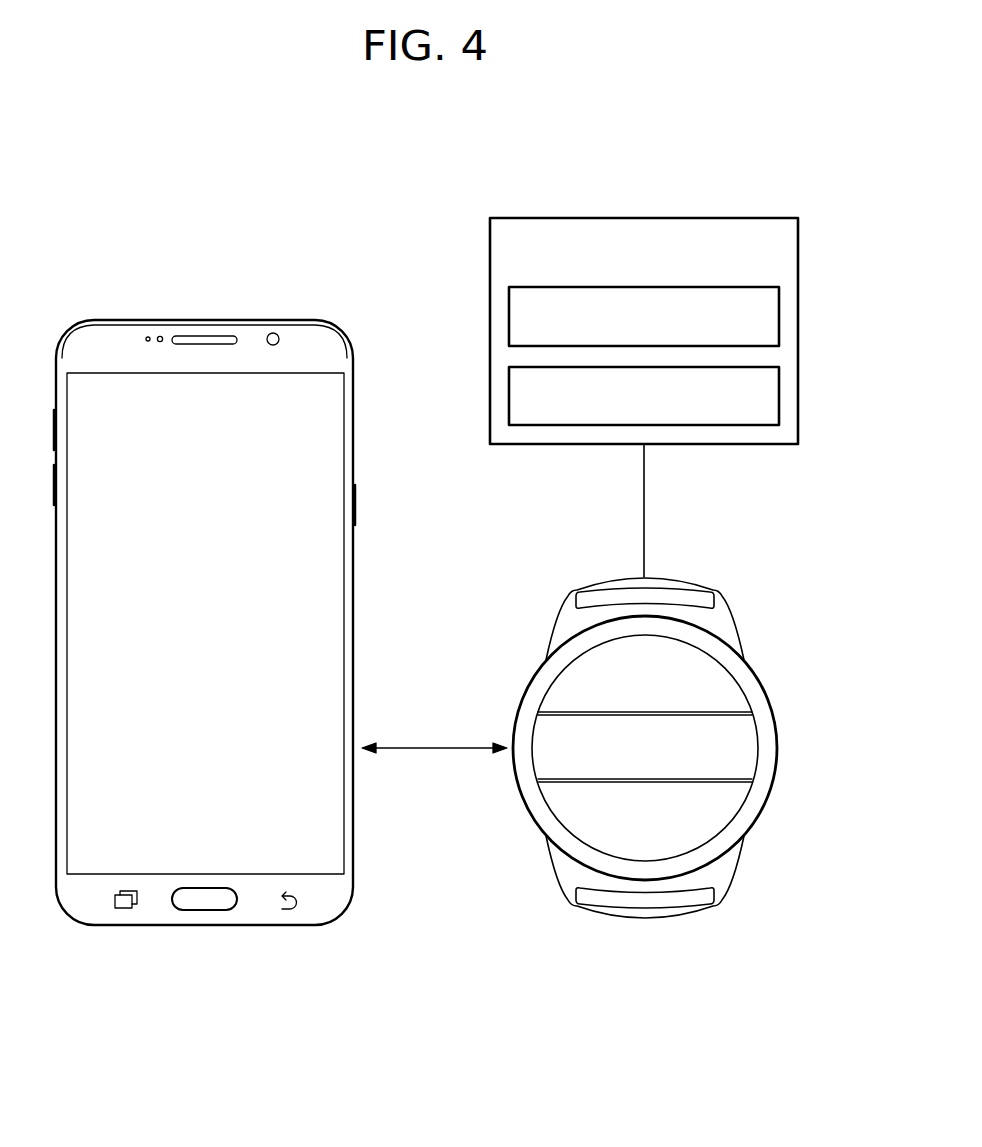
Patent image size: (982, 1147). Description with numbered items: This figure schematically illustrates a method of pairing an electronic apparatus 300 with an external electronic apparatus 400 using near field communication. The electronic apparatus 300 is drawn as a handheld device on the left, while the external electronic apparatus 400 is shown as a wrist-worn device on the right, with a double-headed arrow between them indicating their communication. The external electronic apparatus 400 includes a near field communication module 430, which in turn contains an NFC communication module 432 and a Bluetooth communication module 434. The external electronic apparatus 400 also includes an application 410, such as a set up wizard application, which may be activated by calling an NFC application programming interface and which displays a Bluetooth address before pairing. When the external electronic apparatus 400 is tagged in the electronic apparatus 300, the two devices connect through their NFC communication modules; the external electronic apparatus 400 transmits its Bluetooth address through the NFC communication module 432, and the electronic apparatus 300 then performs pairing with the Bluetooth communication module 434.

The electronic apparatus 300 is at (212, 305).
The external electronic apparatus 400 is at (737, 555).
The application 410 is at (738, 747).
The near field communication module 430 is at (799, 244).
The NFC communication module 432 is at (780, 313).
The Bluetooth communication module 434 is at (780, 391).